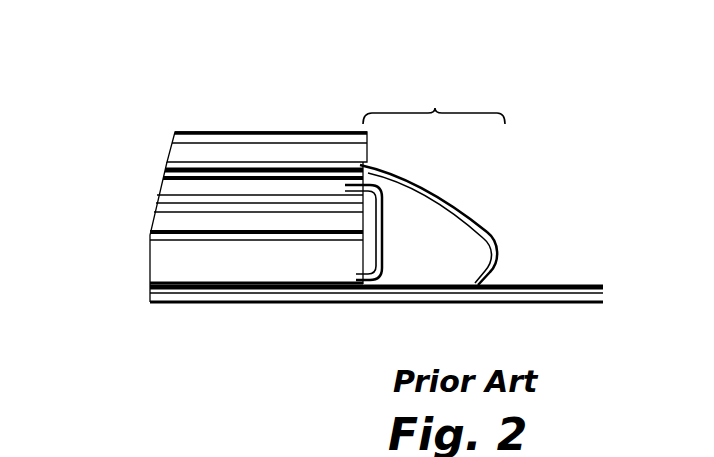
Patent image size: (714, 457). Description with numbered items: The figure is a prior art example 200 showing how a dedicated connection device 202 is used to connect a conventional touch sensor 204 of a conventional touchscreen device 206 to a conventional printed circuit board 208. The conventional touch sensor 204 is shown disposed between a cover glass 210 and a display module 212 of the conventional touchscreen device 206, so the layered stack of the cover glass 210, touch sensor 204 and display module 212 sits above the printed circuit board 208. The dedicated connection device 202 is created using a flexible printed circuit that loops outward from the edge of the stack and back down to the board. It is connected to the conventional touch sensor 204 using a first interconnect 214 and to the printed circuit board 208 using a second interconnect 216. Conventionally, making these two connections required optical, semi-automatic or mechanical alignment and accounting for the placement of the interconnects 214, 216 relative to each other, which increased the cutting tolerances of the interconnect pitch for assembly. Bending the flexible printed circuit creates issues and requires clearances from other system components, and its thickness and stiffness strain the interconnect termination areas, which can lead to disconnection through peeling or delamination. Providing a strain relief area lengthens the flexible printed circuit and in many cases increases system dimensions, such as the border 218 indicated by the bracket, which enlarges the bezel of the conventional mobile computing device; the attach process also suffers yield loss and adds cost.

The example 200 is at (166, 68).
The dedicated connection device 202 is at (450, 207).
The conventional touch sensor 204 is at (167, 170).
The conventional touchscreen device 206 is at (325, 87).
The conventional printed circuit board 208 is at (242, 302).
The cover glass 210 is at (292, 132).
The display module 212 is at (148, 232).
The first interconnect 214 is at (363, 158).
The second interconnect 216 is at (453, 288).
The border 218 is at (437, 108).